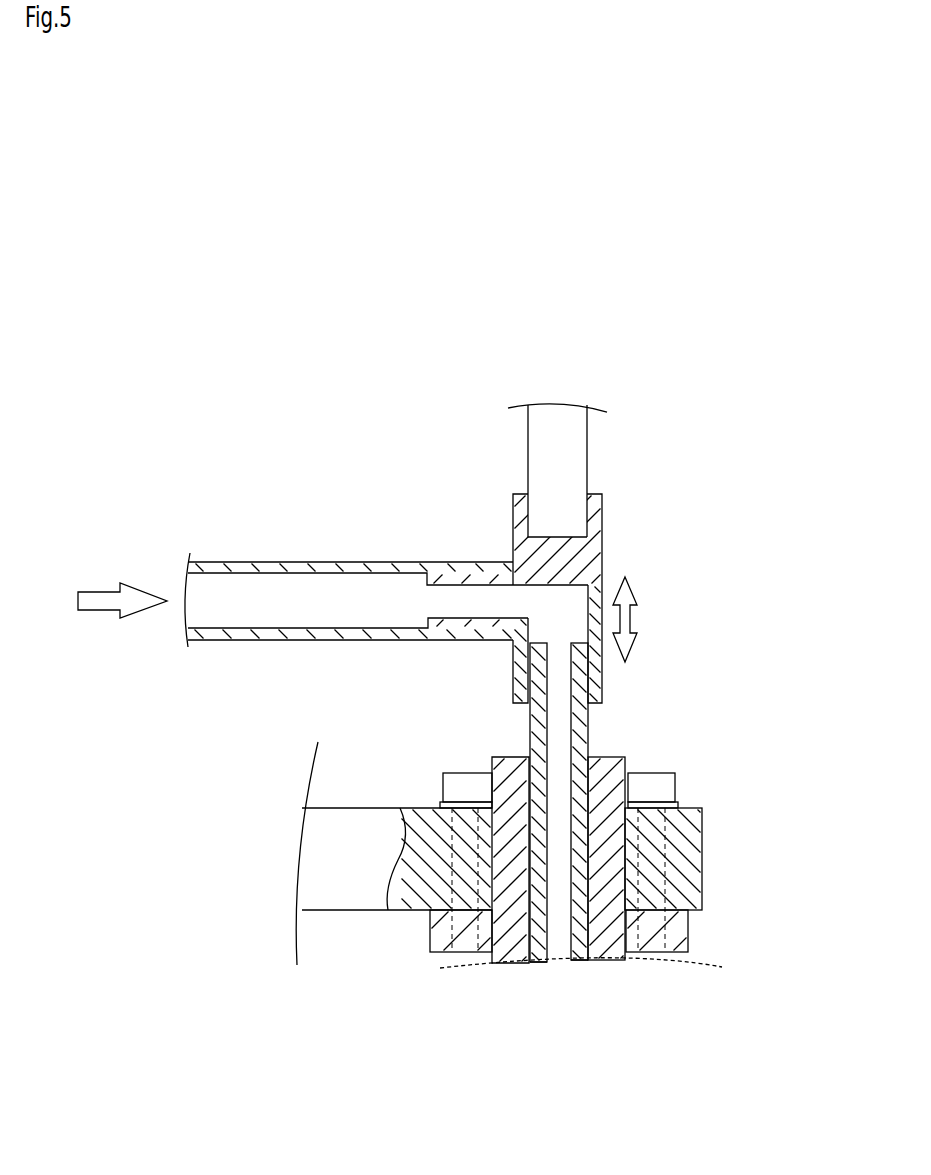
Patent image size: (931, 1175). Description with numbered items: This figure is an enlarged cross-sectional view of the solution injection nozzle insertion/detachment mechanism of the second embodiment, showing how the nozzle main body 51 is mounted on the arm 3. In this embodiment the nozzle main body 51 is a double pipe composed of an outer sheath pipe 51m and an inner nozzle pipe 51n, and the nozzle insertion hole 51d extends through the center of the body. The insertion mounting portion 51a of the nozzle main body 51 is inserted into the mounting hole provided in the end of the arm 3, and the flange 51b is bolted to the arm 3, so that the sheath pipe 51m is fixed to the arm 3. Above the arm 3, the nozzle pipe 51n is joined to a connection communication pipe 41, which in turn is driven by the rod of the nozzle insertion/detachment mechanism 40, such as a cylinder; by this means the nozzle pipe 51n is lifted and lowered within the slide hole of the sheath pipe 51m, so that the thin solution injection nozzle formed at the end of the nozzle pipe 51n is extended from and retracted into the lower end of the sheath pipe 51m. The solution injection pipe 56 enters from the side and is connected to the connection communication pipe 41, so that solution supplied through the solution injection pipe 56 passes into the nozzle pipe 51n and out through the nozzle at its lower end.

The arm 3 is at (343, 832).
The nozzle insertion/detachment mechanism 40 is at (568, 490).
The connection communication pipe 41 is at (570, 572).
The solution injection pipe 56 is at (234, 640).
The nozzle main body 51 is at (617, 804).
The nozzle pipe 51n is at (580, 720).
The sheath pipe 51m is at (588, 775).
The insertion mounting portion 51a is at (515, 817).
The flange 51b is at (688, 928).
The nozzle insertion hole 51d is at (568, 945).